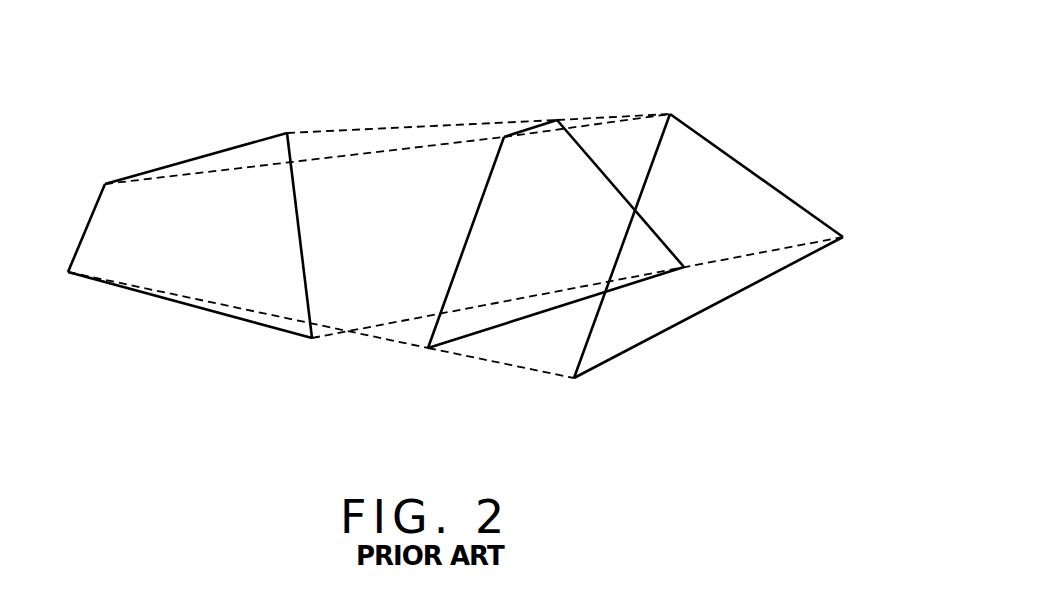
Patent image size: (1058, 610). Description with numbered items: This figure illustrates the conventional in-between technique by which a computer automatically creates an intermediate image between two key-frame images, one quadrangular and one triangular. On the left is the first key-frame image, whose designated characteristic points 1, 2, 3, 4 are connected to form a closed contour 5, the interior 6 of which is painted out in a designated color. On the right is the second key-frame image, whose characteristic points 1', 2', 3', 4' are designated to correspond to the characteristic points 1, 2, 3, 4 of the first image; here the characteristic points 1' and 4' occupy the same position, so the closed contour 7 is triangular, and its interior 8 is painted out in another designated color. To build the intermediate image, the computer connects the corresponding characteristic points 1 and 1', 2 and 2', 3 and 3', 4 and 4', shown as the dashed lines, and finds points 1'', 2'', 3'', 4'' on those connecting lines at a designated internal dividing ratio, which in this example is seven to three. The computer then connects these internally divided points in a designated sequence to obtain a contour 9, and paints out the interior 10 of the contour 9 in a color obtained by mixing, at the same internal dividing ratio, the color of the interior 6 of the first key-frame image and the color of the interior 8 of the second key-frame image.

The characteristic point 1 is at (93, 184).
The characteristic point 2 is at (248, 319).
The characteristic point 3 is at (577, 337).
The characteristic point 4 is at (298, 192).
The closed contour 5 is at (188, 158).
The interior 6 is at (170, 272).
The closed contour 7 is at (728, 300).
The interior 8 is at (745, 187).
The contour 9 is at (463, 237).
The interior 10 is at (514, 192).
The internally divided point 1'' is at (387, 115).
The internally divided point 2'' is at (429, 397).
The internally divided point 3'' is at (579, 279).
The internally divided point 4'' is at (485, 147).
The characteristic point 1' is at (617, 202).
The characteristic point 4' is at (689, 38).
The characteristic point 2' is at (579, 428).
The characteristic point 3' is at (718, 264).